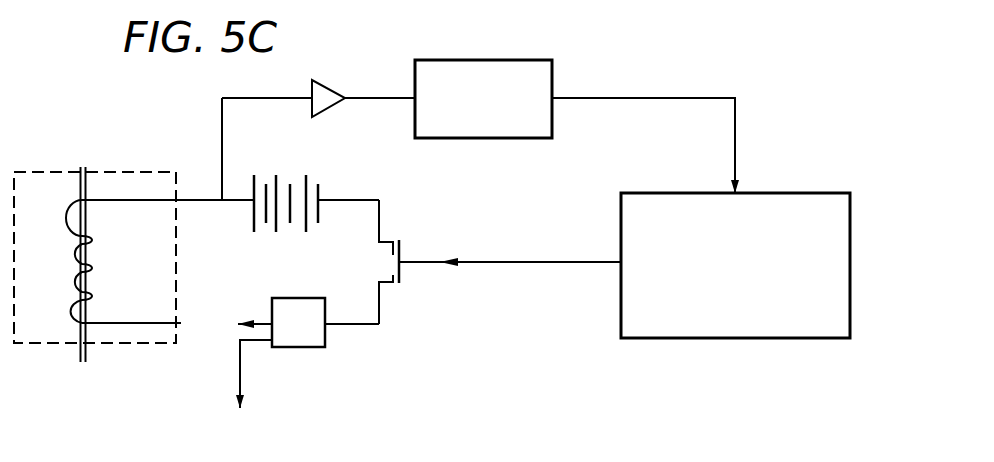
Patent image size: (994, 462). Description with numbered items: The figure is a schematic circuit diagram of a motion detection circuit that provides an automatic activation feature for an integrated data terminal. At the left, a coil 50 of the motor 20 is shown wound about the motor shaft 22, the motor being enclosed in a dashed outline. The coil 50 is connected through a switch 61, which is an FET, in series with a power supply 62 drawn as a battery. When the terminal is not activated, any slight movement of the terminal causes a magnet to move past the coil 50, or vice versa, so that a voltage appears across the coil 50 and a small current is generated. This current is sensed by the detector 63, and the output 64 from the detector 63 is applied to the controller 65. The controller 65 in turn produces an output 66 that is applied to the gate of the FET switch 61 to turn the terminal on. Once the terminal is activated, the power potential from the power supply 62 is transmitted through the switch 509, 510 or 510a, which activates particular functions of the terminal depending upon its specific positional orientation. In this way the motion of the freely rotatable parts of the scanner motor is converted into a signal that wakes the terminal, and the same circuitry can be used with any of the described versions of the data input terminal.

The motor 20 is at (32, 347).
The motor shaft 22 is at (84, 364).
The coil 50 is at (92, 263).
The switch 61 is at (399, 241).
The power supply 62 is at (313, 179).
The detector 63 is at (515, 58).
The output 64 is at (693, 96).
The controller 65 is at (760, 192).
The output 66 is at (543, 259).
The switch 509 is at (405, 356).
The switch 510 is at (405, 356).
The switch 510a is at (297, 348).